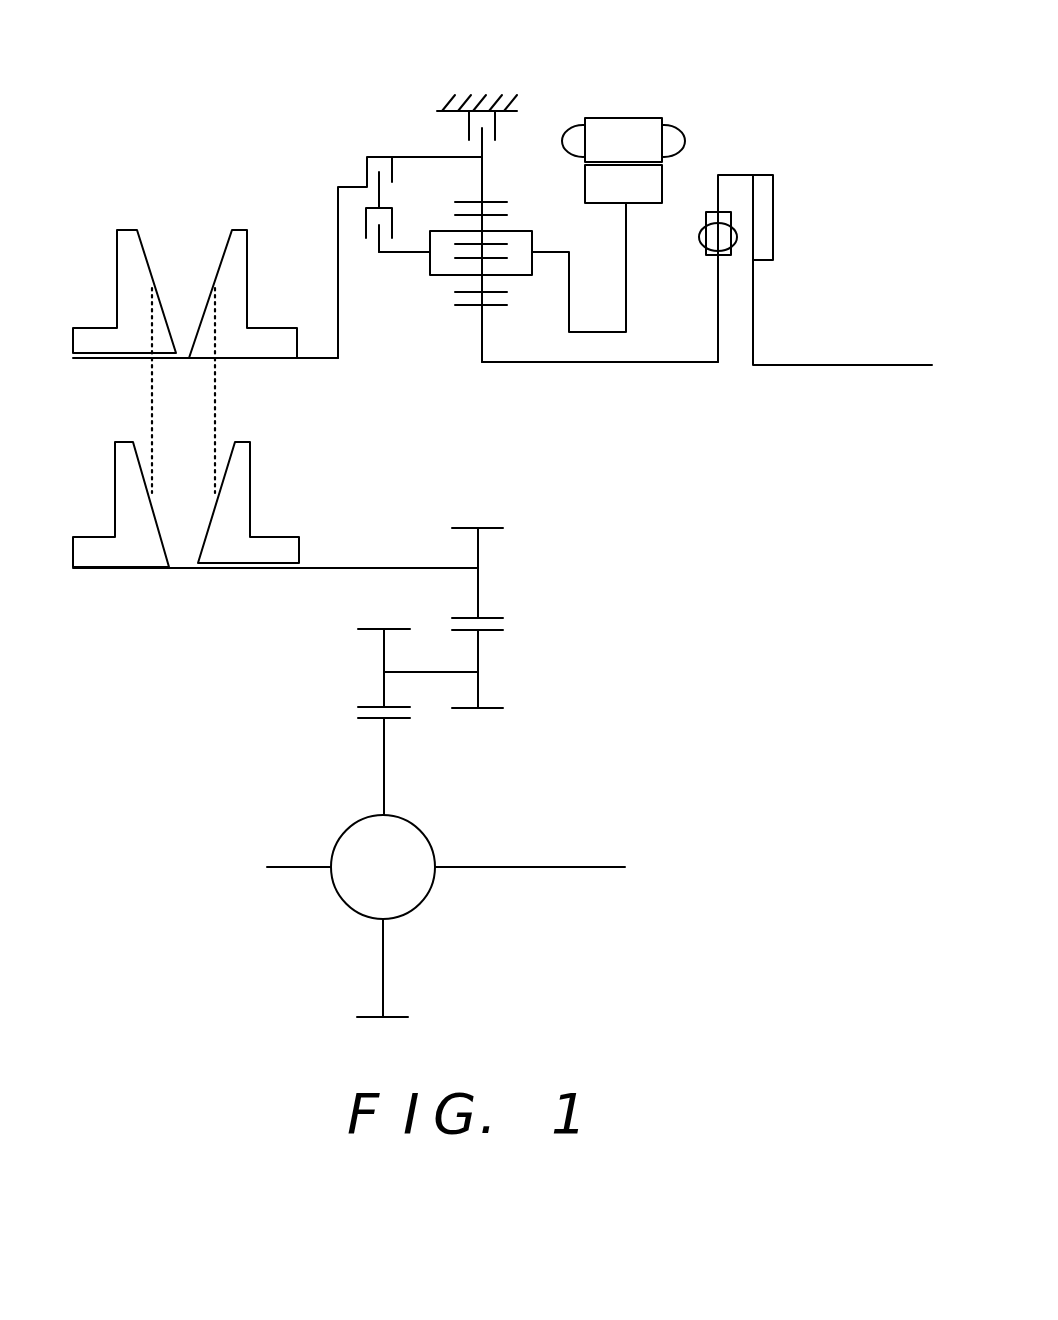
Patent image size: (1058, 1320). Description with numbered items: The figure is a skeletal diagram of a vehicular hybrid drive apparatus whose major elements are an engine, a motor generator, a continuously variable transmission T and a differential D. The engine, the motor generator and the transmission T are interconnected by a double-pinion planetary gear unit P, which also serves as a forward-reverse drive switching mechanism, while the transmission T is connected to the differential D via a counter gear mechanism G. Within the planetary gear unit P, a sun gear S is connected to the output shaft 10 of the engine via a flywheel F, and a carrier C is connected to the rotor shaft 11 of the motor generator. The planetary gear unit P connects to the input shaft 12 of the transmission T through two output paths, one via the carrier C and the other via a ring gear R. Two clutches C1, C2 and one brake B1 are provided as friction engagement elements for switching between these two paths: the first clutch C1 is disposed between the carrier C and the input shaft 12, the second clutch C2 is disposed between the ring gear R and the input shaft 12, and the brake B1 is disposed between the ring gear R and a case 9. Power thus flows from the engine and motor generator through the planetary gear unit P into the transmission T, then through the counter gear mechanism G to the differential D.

The continuously variable transmission T is at (180, 235).
The input shaft 12 is at (315, 360).
The second clutch C2 is at (365, 173).
The first clutch C1 is at (373, 237).
The case 9 is at (440, 105).
The brake B1 is at (467, 122).
The double-pinion planetary gear unit P is at (491, 250).
The ring gear R is at (490, 198).
The carrier C is at (532, 245).
The sun gear S is at (497, 308).
The rotor shaft 11 is at (594, 331).
The output shaft 10 is at (790, 367).
The flywheel F is at (737, 175).
The counter gear mechanism G is at (506, 655).
The differential D is at (338, 815).